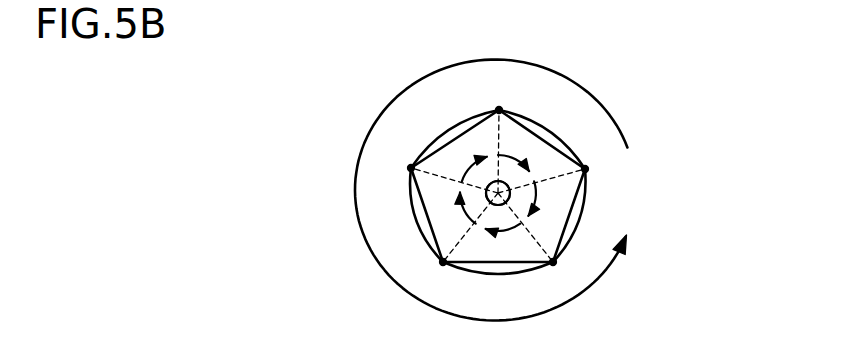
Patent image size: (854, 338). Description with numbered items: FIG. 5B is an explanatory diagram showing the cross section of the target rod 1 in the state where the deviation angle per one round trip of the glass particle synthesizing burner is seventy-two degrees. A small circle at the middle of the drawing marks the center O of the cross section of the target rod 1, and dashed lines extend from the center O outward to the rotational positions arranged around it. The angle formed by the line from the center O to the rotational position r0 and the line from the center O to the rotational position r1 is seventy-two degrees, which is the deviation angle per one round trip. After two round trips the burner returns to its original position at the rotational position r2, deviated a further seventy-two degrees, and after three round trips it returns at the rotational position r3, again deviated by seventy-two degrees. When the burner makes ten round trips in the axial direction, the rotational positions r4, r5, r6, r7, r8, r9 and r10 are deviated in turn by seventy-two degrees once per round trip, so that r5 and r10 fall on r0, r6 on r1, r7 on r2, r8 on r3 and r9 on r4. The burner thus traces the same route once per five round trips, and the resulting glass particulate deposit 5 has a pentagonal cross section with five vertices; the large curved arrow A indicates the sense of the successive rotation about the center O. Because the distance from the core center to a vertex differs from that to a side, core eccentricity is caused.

The target rod 1 is at (505, 182).
The glass particulate deposit 5 is at (434, 233).
The center of the cross section of the target rod O is at (510, 193).
The rotation direction A is at (610, 272).
The rotational position r0 is at (496, 100).
The rotational position r1 is at (612, 171).
The rotational position r2 is at (568, 275).
The rotational position r3 is at (426, 274).
The rotational position r4 is at (394, 171).
The rotational position r5 is at (496, 100).
The rotational position r6 is at (612, 171).
The rotational position r7 is at (568, 275).
The rotational position r8 is at (426, 274).
The rotational position r9 is at (394, 171).
The rotational position r10 is at (496, 100).